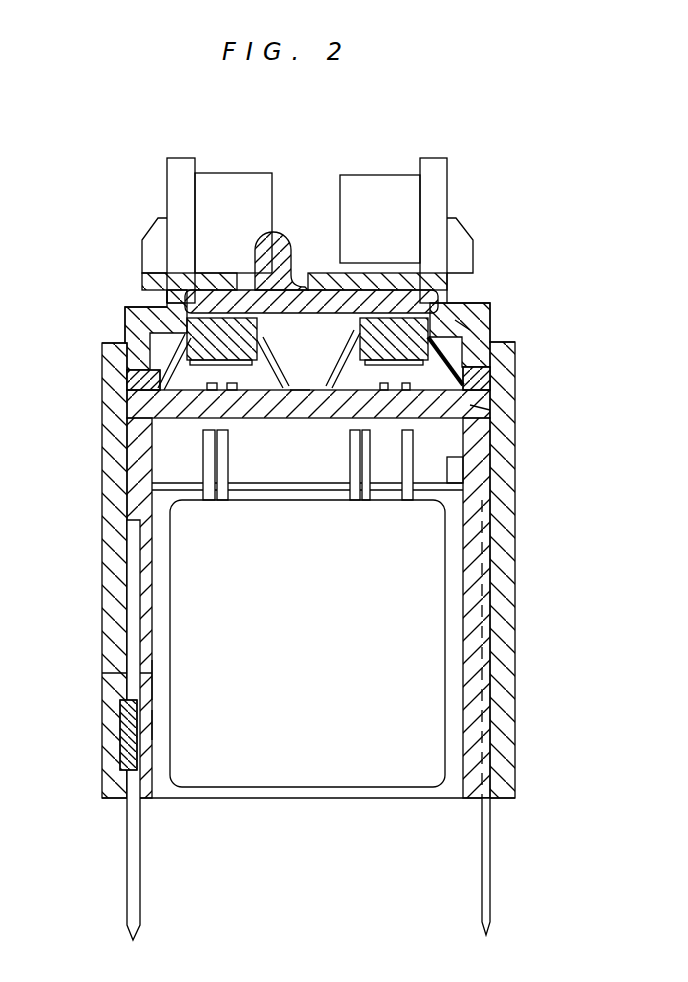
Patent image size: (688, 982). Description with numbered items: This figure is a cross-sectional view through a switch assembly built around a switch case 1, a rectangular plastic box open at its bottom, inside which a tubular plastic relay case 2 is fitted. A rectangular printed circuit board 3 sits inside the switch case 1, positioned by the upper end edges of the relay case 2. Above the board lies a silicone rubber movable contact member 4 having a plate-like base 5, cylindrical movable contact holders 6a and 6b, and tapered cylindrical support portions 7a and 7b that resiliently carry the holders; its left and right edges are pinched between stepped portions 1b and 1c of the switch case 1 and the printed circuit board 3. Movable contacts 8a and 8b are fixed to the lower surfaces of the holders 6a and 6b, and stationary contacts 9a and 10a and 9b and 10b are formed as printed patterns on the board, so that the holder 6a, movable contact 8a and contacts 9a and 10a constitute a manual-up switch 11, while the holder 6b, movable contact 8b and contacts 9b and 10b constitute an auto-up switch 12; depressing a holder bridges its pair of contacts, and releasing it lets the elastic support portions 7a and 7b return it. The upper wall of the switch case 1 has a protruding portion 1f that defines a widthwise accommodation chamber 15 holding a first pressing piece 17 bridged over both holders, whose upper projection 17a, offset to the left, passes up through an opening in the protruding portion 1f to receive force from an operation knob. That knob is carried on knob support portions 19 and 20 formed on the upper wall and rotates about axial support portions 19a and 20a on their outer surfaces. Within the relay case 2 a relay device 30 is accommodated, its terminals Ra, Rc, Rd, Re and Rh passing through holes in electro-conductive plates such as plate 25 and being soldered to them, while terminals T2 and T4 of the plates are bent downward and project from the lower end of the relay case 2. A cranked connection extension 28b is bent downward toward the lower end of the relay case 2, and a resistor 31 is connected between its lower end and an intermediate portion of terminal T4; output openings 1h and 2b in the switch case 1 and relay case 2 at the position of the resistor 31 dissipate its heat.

The switch case 1 is at (516, 565).
The stepped portion 1b is at (130, 383).
The stepped portion 1c is at (472, 378).
The protruding portion 1f is at (165, 288).
The output opening 1h is at (115, 674).
The relay case 2 is at (492, 612).
The output opening 2b is at (153, 687).
The printed circuit board 3 is at (500, 428).
The movable contact member 4 is at (465, 338).
The base 5 is at (300, 398).
The movable contact holder 6a is at (258, 342).
The movable contact holder 6b is at (362, 343).
The support portion 7a is at (125, 358).
The support portion 7b is at (492, 365).
The movable contact 8a is at (160, 307).
The movable contact 8b is at (478, 307).
The stationary contact 9a is at (207, 390).
The stationary contact 9b is at (382, 390).
The stationary contact 10a is at (232, 390).
The stationary contact 10b is at (405, 390).
The manual-up switch 11 is at (187, 372).
The auto-up switch 12 is at (478, 410).
The accommodation chamber 15 is at (195, 312).
The first pressing piece 17 is at (247, 297).
The projection 17a is at (278, 240).
The knob support portion 19 is at (177, 157).
The axial support portion 19a is at (148, 238).
The knob support portion 20 is at (428, 157).
The axial support portion 20a is at (473, 250).
The electro-conductive plate 25 is at (325, 482).
The connection extension 28b is at (153, 728).
The relay device 30 is at (262, 800).
The resistor 31 is at (120, 730).
The terminal T2 is at (491, 866).
The terminal T4 is at (126, 881).
The terminal Rh is at (205, 462).
The terminal Rd is at (228, 462).
The terminal Ra is at (352, 462).
The terminal Re is at (365, 462).
The terminal Rc is at (408, 462).